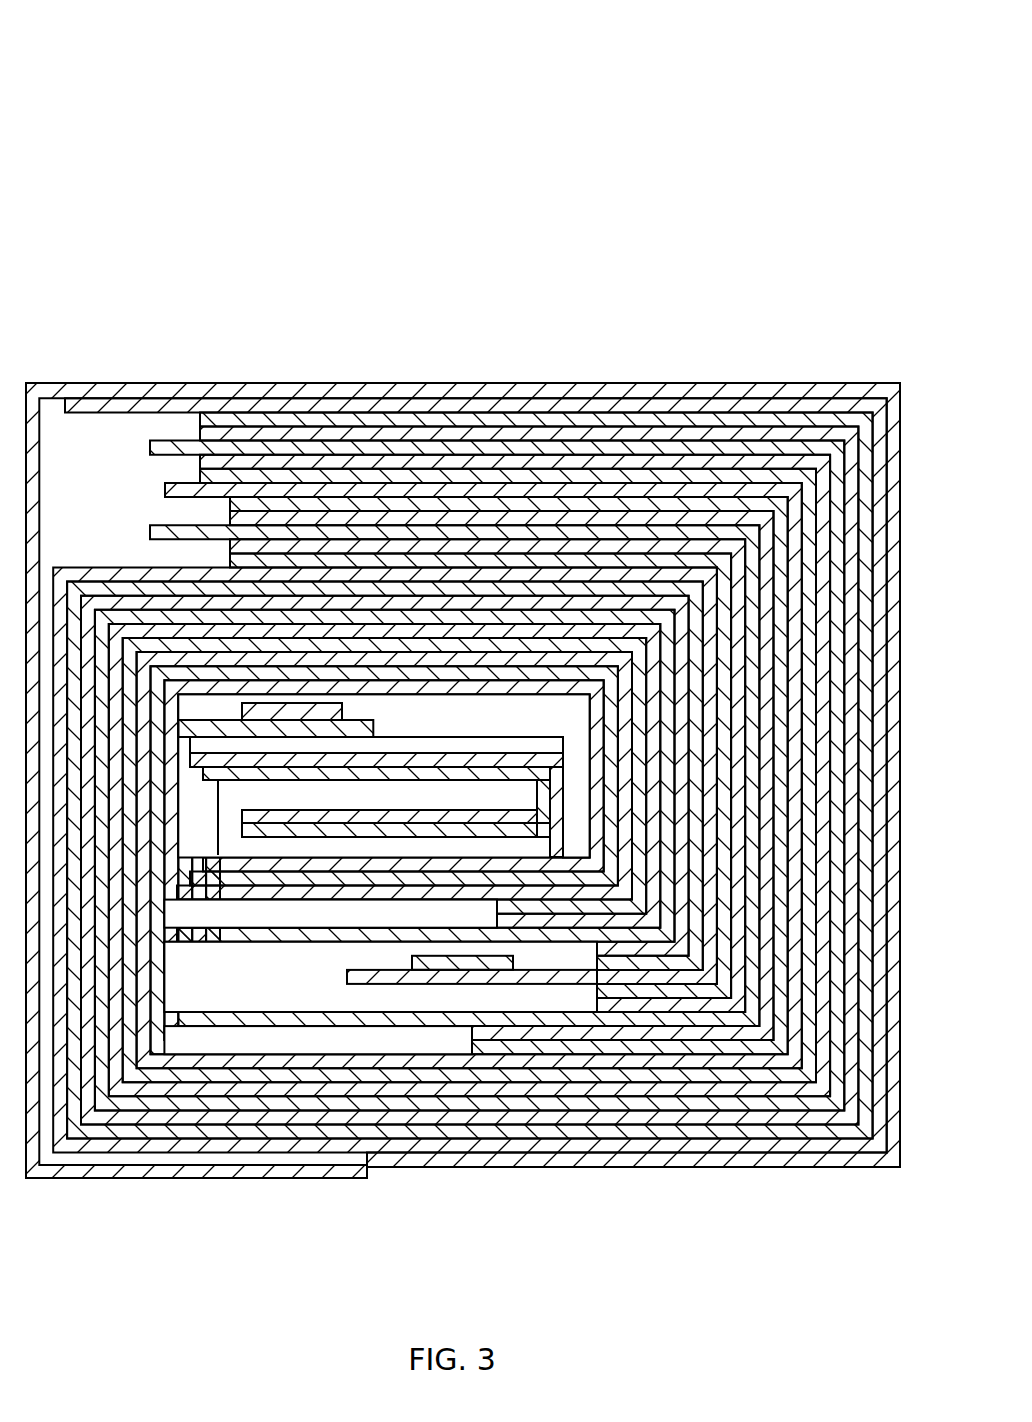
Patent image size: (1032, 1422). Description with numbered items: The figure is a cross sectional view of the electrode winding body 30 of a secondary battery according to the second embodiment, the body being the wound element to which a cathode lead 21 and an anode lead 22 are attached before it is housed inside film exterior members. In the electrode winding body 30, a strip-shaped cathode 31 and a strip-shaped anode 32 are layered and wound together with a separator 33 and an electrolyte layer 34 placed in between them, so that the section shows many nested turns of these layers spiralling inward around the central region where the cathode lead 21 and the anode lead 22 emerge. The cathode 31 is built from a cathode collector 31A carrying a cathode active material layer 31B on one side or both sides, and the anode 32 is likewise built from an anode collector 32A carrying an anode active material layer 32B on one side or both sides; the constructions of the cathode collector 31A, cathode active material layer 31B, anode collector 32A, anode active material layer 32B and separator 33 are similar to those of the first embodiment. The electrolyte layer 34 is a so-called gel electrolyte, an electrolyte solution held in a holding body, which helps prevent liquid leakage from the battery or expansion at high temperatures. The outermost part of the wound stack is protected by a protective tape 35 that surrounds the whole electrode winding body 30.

The electrode winding body 30 is at (471, 629).
The cathode lead 21 is at (262, 720).
The anode lead 22 is at (453, 969).
The cathode 31 is at (450, 635).
The cathode collector 31A is at (190, 490).
The cathode active material layer 31B is at (270, 504).
The anode 32 is at (470, 670).
The anode collector 32A is at (685, 242).
The anode active material layer 32B is at (540, 560).
The separator 33 is at (605, 485).
The electrolyte layer 34 is at (720, 543).
The protective tape 35 is at (848, 395).